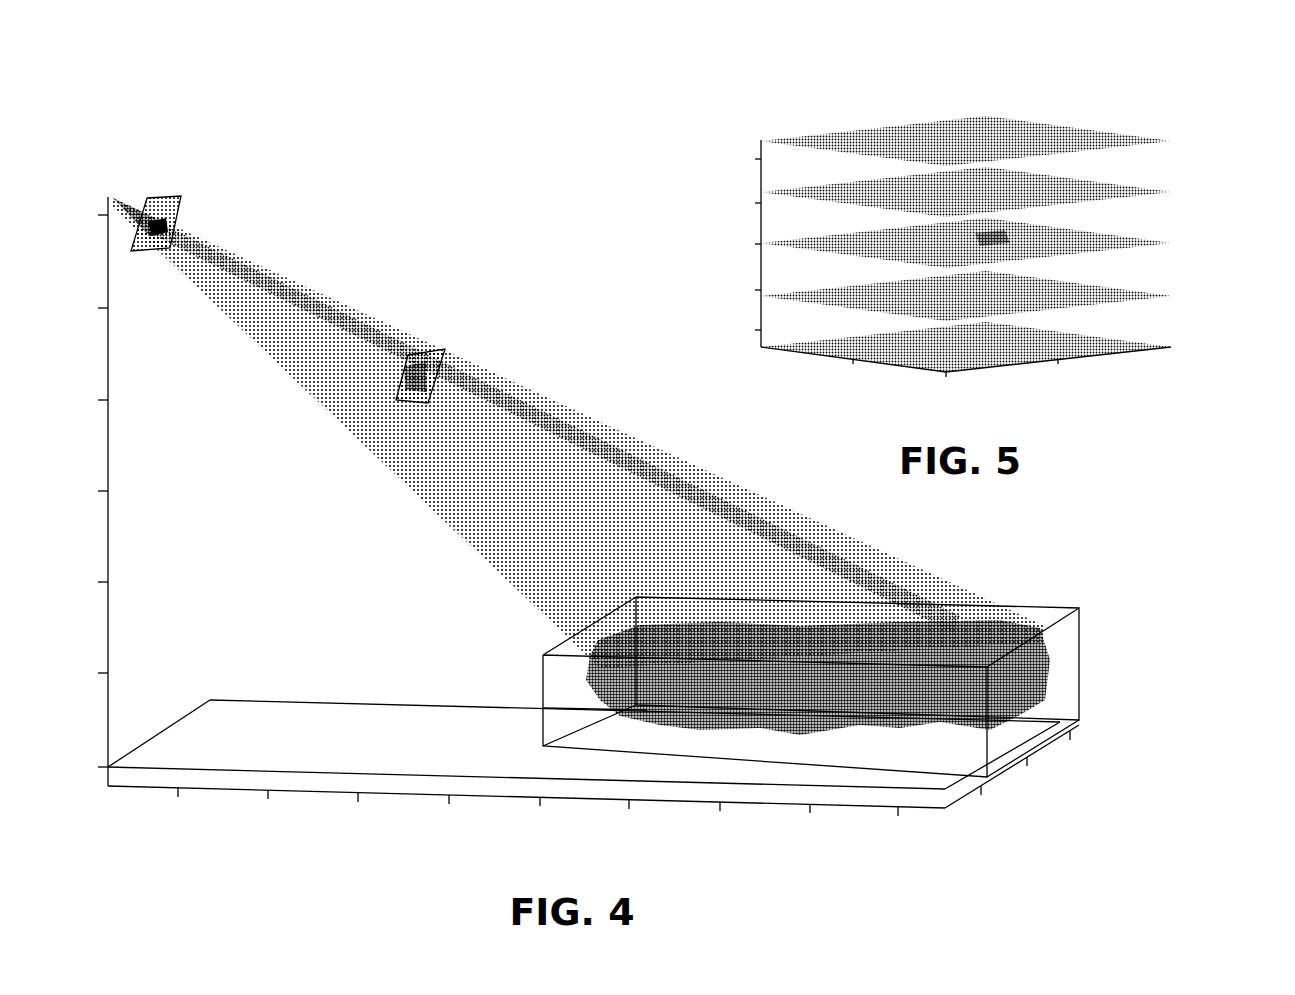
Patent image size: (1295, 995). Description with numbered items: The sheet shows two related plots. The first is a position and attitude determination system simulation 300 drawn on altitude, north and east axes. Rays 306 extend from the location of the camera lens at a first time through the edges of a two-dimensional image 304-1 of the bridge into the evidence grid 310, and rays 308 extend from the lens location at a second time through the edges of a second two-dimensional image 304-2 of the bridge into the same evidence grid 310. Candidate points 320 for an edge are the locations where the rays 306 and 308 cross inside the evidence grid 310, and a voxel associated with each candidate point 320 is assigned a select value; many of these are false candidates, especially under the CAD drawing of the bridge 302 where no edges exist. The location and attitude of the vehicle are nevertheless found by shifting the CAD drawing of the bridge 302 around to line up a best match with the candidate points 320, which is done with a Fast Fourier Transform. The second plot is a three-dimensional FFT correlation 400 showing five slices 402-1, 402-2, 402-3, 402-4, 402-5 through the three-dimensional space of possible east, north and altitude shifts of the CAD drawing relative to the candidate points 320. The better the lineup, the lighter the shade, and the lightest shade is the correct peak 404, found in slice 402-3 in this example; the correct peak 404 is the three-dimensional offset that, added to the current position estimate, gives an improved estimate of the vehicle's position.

In FIG. 4, the position and attitude determination system simulation 300 is at (522, 268).
In FIG. 4, the CAD drawing of the bridge 302 is at (1015, 632).
In FIG. 4, the 2D image of the bridge at a first time 304-1 is at (172, 223).
In FIG. 4, the 2D image of the bridge at a second time 304-2 is at (403, 380).
In FIG. 4, the rays 306 is at (252, 273).
In FIG. 4, the rays 308 is at (490, 483).
In FIG. 4, the evidence grid 310 is at (1073, 685).
In FIG. 4, the candidate points 320 is at (647, 707).
In FIG. 5, the 3D FFT correlation 400 is at (1147, 48).
In FIG. 5, the first slice 402-1 is at (1128, 142).
In FIG. 5, the second slice 402-2 is at (1138, 193).
In FIG. 5, the third slice 402-3 is at (1170, 248).
In FIG. 5, the fourth slice 402-4 is at (1137, 305).
In FIG. 5, the fifth slice 402-5 is at (1150, 350).
In FIG. 5, the correct peak 404 is at (993, 240).